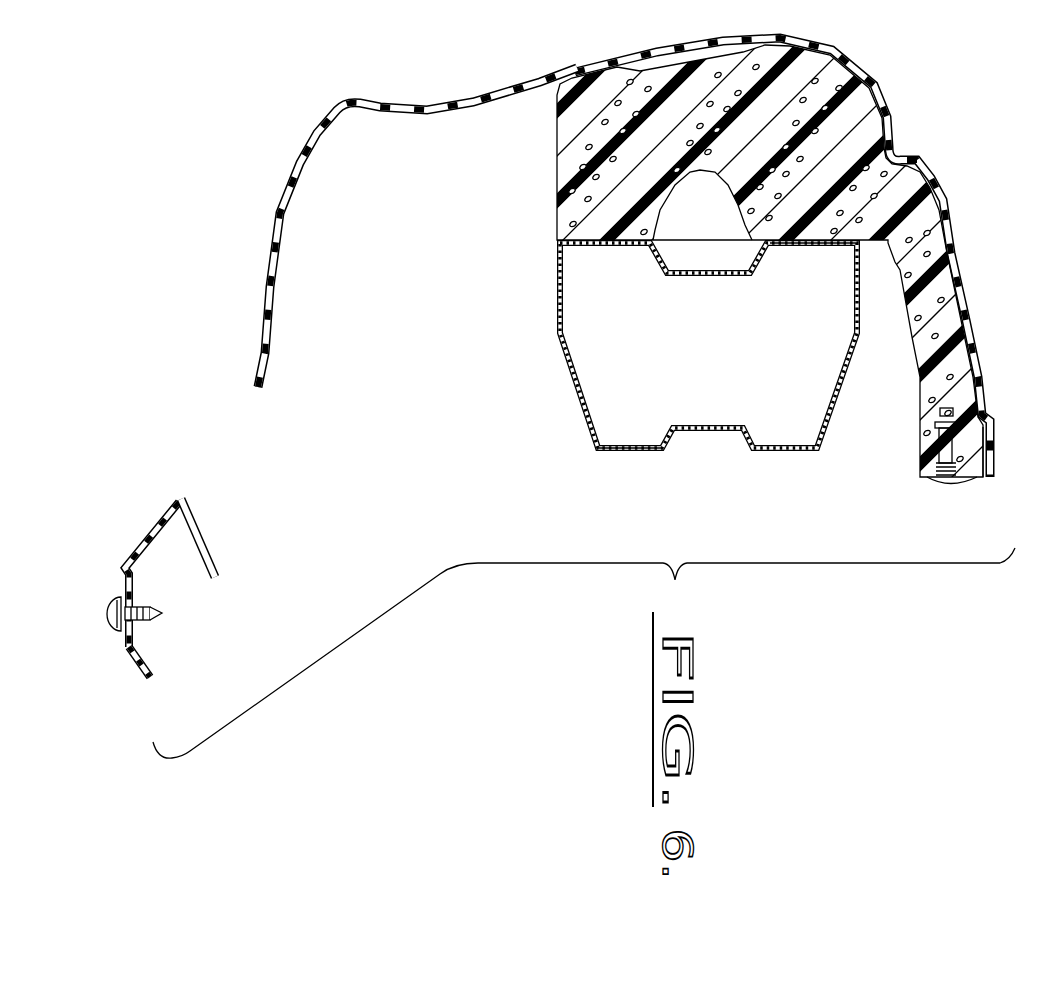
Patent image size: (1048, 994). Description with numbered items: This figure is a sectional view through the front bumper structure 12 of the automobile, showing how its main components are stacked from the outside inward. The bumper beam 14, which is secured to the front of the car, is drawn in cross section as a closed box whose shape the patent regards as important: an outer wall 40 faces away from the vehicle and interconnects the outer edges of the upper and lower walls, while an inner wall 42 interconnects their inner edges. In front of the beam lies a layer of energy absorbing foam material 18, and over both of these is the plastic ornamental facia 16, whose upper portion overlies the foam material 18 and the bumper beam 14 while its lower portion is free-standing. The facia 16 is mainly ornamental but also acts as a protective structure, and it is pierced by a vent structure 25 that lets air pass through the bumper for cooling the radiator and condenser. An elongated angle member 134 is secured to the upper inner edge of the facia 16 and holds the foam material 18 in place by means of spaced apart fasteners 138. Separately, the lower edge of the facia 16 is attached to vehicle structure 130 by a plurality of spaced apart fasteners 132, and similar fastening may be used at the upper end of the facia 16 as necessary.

The bumper structure 12 is at (218, 355).
The bumper beam 14 is at (574, 406).
The plastic ornamental facia 16 is at (970, 273).
The energy absorbing foam material 18 is at (556, 177).
The vent structure 25 is at (203, 536).
The outer wall 40 is at (822, 249).
The inner wall 42 is at (638, 444).
The vehicle structure 130 is at (137, 672).
The fasteners 132 is at (107, 613).
The elongated angle member 134 is at (986, 445).
The fasteners 138 is at (937, 480).